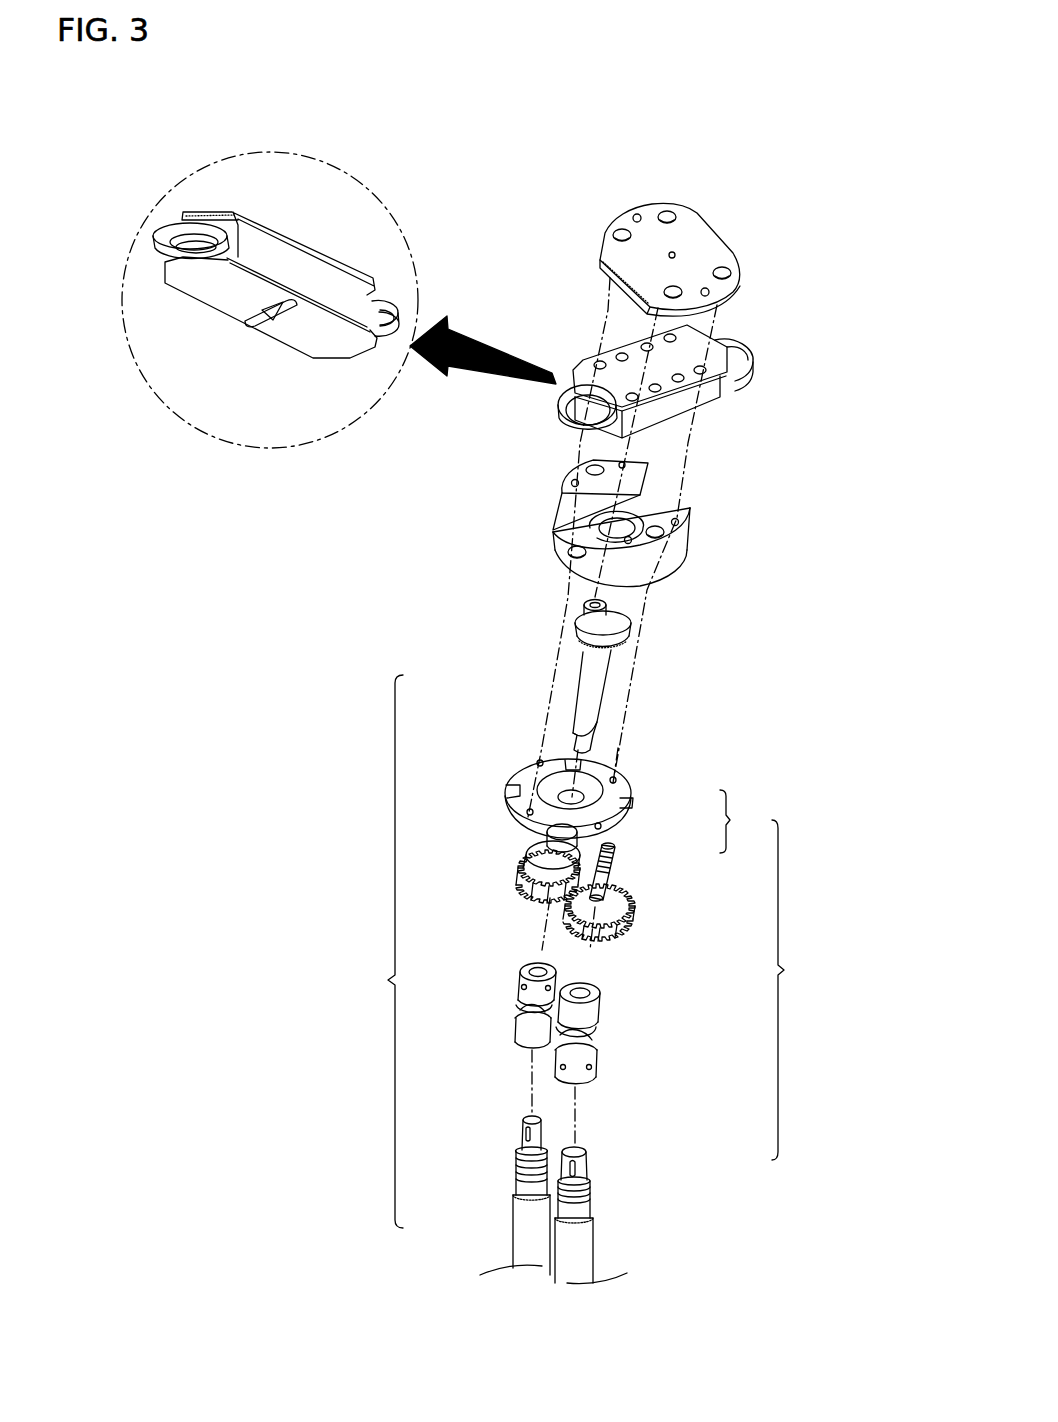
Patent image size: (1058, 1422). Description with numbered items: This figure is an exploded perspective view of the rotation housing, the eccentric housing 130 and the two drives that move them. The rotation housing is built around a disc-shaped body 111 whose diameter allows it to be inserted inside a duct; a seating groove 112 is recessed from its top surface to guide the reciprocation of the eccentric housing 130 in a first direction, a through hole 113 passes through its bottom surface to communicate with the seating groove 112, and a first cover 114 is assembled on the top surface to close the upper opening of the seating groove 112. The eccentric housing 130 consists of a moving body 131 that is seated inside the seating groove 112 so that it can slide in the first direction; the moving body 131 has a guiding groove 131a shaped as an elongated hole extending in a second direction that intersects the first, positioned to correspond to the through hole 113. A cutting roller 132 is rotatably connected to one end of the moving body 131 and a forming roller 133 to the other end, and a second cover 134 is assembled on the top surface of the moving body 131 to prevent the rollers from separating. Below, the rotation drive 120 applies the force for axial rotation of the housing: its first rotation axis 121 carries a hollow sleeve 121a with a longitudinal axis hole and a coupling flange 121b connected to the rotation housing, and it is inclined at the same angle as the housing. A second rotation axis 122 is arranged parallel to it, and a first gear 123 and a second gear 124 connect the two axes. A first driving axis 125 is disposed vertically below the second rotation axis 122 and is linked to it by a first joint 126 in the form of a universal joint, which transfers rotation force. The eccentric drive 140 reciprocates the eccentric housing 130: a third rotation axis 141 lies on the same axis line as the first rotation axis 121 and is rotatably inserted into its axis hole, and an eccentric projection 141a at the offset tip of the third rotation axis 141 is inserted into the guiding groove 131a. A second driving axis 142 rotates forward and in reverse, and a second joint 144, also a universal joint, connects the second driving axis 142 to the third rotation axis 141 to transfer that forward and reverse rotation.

The disc-shaped body 111 is at (655, 523).
The seating groove 112 is at (628, 486).
The through hole 113 is at (595, 535).
The first cover 114 is at (728, 258).
The rotation drive 120 is at (803, 990).
The first rotation axis 121 is at (636, 811).
The hollow sleeve 121a is at (595, 842).
The coupling flange 121b is at (618, 786).
The second rotation axis 122 is at (605, 876).
The first gear 123 is at (493, 897).
The second gear 124 is at (635, 912).
The first driving axis 125 is at (590, 1252).
The first joint 126 is at (600, 1010).
The eccentric housing 130 is at (448, 309).
The moving body 131 is at (425, 388).
The guiding groove 131a is at (260, 312).
The cutting roller 132 is at (163, 228).
The forming roller 133 is at (400, 287).
The second cover 134 is at (235, 210).
The eccentric drive 140 is at (371, 951).
The third rotation axis 141 is at (586, 678).
The eccentric projection 141a is at (590, 605).
The second driving axis 142 is at (520, 1230).
The second joint 144 is at (518, 973).